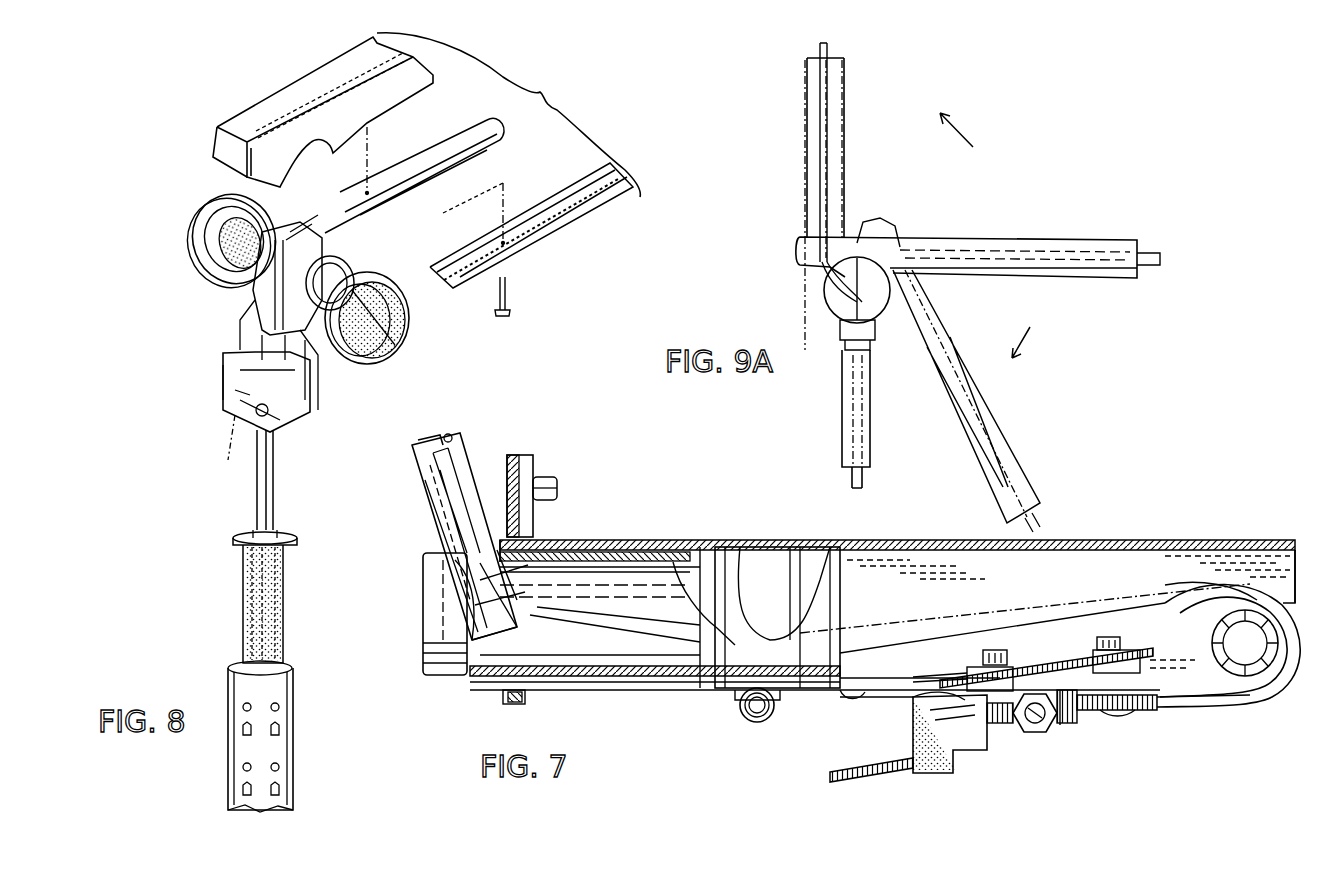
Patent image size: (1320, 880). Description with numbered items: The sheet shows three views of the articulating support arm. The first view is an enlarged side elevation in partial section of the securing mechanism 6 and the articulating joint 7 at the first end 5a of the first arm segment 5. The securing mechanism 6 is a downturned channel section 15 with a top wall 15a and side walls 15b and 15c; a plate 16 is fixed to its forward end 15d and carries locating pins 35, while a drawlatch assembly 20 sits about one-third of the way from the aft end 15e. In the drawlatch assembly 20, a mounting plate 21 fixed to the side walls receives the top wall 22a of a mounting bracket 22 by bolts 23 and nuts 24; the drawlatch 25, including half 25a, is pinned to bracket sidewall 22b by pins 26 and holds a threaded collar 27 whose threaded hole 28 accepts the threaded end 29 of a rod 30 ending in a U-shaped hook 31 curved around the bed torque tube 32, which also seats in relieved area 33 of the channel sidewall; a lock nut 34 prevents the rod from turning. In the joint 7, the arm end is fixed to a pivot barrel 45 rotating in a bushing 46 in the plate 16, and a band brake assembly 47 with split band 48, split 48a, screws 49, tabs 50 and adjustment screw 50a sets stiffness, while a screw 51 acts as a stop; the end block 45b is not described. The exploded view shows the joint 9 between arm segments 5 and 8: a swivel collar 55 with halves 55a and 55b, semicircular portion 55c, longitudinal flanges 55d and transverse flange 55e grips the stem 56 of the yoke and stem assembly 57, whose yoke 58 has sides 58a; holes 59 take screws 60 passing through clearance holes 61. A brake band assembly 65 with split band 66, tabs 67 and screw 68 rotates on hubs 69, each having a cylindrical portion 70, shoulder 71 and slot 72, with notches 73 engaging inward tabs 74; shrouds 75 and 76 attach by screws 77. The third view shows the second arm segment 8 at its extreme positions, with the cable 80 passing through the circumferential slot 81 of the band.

In FIG. 8, the first arm segment 5 is at (202, 780).
In FIG. 9A, the first arm segment 5 is at (831, 443).
In FIG. 7, the first arm segment 5 is at (478, 445).
In FIG. 7, the first end of first arm segment 5a is at (448, 548).
In FIG. 7, the securing mechanism 6 is at (691, 776).
In FIG. 7, the articulating joint 7 is at (448, 713).
In FIG. 8, the second arm segment 8 is at (508, 115).
In FIG. 9A, the second arm segment 8 is at (785, 170).
In FIG. 8, the joint 9 is at (168, 335).
In FIG. 9A, the joint 9 is at (779, 296).
In FIG. 7, the channel section 15 is at (1170, 538).
In FIG. 7, the top wall 15a is at (708, 545).
In FIG. 7, the side wall 15b is at (775, 596).
In FIG. 7, the side wall 15c is at (900, 609).
In FIG. 7, the forward end 15d is at (548, 540).
In FIG. 7, the aft end 15e is at (1295, 556).
In FIG. 7, the plate 16 is at (515, 457).
In FIG. 7, the drawlatch assembly 20 is at (1063, 778).
In FIG. 7, the mounting plate 21 is at (1050, 662).
In FIG. 7, the mounting bracket 22 is at (913, 680).
In FIG. 7, the top wall of mounting bracket 22a is at (1070, 725).
In FIG. 7, the sidewall of mounting bracket 22b is at (1120, 720).
In FIG. 7, the bolts 23 is at (976, 672).
In FIG. 7, the nuts 24 is at (1005, 660).
In FIG. 7, the drawlatch 25 is at (905, 745).
In FIG. 7, the drawlatch half 25a is at (968, 765).
In FIG. 7, the pins 26 is at (1130, 715).
In FIG. 7, the threaded collar 27 is at (1020, 740).
In FIG. 7, the threaded hole 28 is at (1040, 738).
In FIG. 7, the threaded end 29 is at (930, 710).
In FIG. 7, the rod 30 is at (1205, 705).
In FIG. 7, the U-shaped hook 31 is at (1290, 688).
In FIG. 7, the torque tube 32 is at (1210, 640).
In FIG. 7, the U-shaped relieved area 33 is at (1185, 580).
In FIG. 7, the lock nut 34 is at (1067, 726).
In FIG. 7, the locating pins 35 is at (558, 485).
In FIG. 7, the pivot barrel 45 is at (483, 692).
In FIG. 7, the housing end block 45b is at (440, 683).
In FIG. 7, the bushing 46 is at (505, 695).
In FIG. 7, the band brake assembly 47 is at (788, 736).
In FIG. 7, the split band 48 is at (722, 547).
In FIG. 7, the split 48a is at (740, 695).
In FIG. 7, the screws 49 is at (690, 678).
In FIG. 7, the tabs 50 is at (757, 722).
In FIG. 7, the adjustment screw 50a is at (775, 710).
In FIG. 7, the screw 51 is at (848, 690).
In FIG. 8, the swivel collar 55 is at (196, 604).
In FIG. 8, the collar half 55a is at (285, 533).
In FIG. 8, the collar half 55b is at (300, 543).
In FIG. 8, the semicircular portion 55c is at (252, 625).
In FIG. 8, the longitudinal flanges 55d is at (243, 582).
In FIG. 8, the transverse flange 55e is at (240, 535).
In FIG. 8, the stem 56 is at (274, 480).
In FIG. 8, the yoke and stem assembly 57 is at (202, 441).
In FIG. 8, the yoke 58 is at (312, 405).
In FIG. 8, the sides of yoke 58a is at (225, 382).
In FIG. 8, the holes 59 is at (285, 578).
In FIG. 8, the screws 60 is at (255, 738).
In FIG. 8, the clearance holes 61 is at (272, 704).
In FIG. 8, the brake band assembly 65 is at (222, 306).
In FIG. 8, the split band 66 is at (375, 252).
In FIG. 8, the tabs 67 is at (292, 228).
In FIG. 8, the screw 68 is at (240, 343).
In FIG. 8, the hubs 69 is at (216, 200).
In FIG. 8, the cylindrical portion 70 is at (205, 239).
In FIG. 8, the shoulder 71 is at (225, 230).
In FIG. 8, the slot 72 is at (390, 282).
In FIG. 8, the notches 73 is at (320, 372).
In FIG. 8, the inwardly facing tabs 74 is at (230, 226).
In FIG. 8, the upper decorative shroud 75 is at (292, 92).
In FIG. 9A, the upper decorative shroud 75 is at (1008, 240).
In FIG. 8, the lower decorative shroud 76 is at (590, 213).
In FIG. 9A, the lower decorative shroud 76 is at (1010, 277).
In FIG. 8, the screws 77 is at (509, 313).
In FIG. 8, the cable 80 is at (220, 444).
In FIG. 9A, the cable 80 is at (832, 47).
In FIG. 7, the cable 80 is at (1070, 603).
In FIG. 8, the circumferential slot 81 is at (392, 332).
In FIG. 9A, the circumferential slot 81 is at (878, 235).